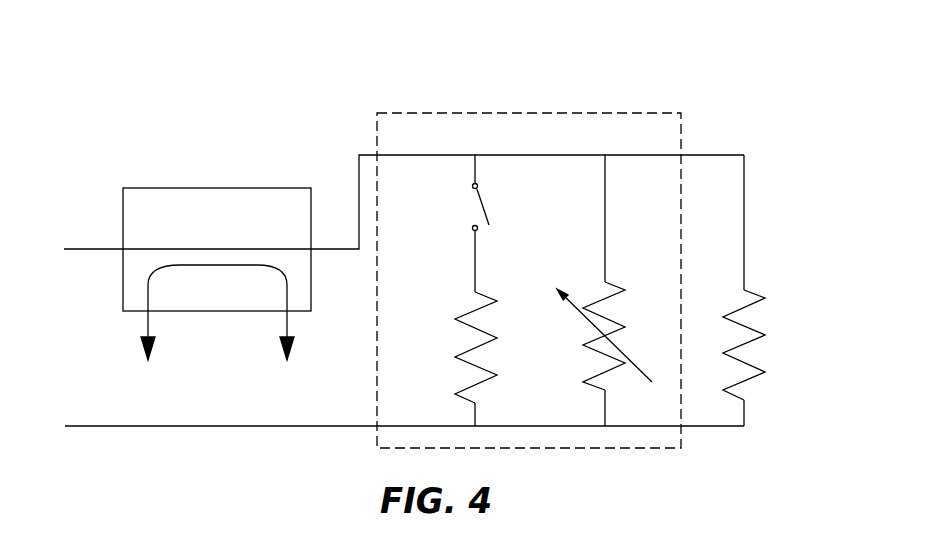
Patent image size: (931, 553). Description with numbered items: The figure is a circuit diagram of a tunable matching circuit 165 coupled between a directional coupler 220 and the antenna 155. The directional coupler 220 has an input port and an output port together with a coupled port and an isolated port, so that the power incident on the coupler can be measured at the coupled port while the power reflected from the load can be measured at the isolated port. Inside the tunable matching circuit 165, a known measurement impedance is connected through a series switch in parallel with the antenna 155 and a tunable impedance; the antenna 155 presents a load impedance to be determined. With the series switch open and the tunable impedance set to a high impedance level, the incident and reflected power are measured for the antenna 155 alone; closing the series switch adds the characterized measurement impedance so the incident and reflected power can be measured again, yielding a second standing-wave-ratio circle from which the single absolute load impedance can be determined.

The directional coupler 220 is at (199, 229).
The tunable matching circuit 165 is at (557, 112).
The antenna 155 is at (757, 293).